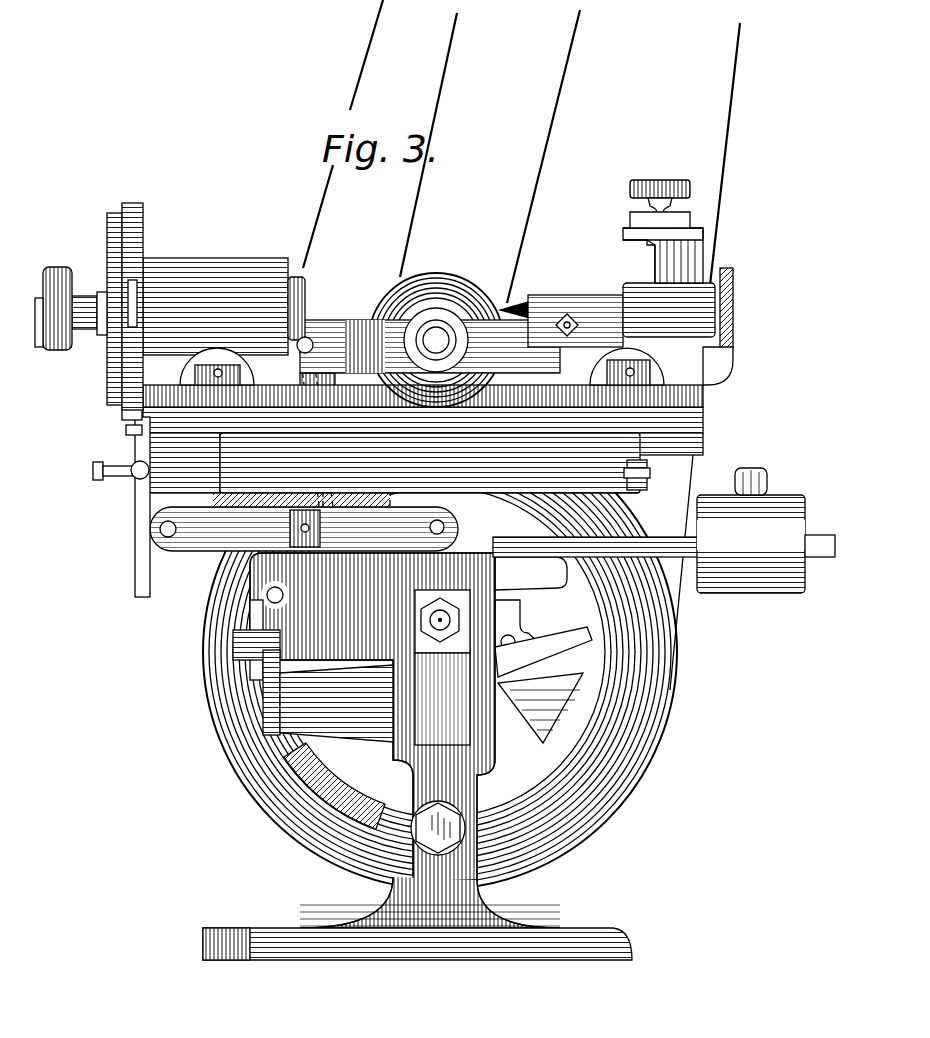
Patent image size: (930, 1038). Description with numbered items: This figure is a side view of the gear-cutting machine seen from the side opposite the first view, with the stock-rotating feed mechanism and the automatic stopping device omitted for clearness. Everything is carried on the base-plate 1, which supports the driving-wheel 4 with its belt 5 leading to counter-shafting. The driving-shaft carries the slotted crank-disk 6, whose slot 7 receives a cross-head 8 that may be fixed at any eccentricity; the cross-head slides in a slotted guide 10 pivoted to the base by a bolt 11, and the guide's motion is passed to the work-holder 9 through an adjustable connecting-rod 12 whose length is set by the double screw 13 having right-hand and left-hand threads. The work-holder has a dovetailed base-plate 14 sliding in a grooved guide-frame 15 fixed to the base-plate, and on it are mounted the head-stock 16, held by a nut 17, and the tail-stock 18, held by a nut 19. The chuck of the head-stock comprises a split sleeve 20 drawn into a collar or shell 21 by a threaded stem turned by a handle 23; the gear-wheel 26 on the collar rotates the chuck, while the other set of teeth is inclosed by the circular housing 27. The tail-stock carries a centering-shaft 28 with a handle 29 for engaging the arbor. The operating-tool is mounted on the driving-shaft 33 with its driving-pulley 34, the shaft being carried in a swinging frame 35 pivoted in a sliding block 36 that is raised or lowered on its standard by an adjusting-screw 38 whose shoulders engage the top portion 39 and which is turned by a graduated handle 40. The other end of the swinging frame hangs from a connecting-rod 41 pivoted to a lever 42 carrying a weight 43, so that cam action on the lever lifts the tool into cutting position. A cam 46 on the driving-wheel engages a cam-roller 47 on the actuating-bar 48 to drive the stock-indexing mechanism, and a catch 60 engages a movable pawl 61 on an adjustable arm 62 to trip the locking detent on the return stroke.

The base-plate 1 is at (480, 885).
The driving-wheel 4 is at (596, 680).
The belt 5 is at (692, 634).
The slotted crank-disk 6 is at (452, 672).
The slot 7 is at (462, 570).
The cross-head 8 is at (462, 600).
The work-holder 9 is at (684, 413).
The slotted guide 10 is at (405, 660).
The bolt 11 is at (422, 835).
The adjustable connecting-rod 12 is at (205, 540).
The double screw 13 is at (290, 542).
The dovetailed base-plate 14 is at (700, 440).
The grooved guide-frame 15 is at (640, 490).
The head-stock 16 is at (222, 272).
The nut 17 is at (120, 362).
The tail-stock 18 is at (640, 292).
The nut 19 is at (619, 365).
The split sleeve 20 is at (310, 306).
The collar or shell 21 is at (341, 134).
The handle 23 is at (65, 270).
The gear-wheel 26 is at (106, 383).
The circular shell or housing 27 is at (135, 246).
The centering-shaft 28 is at (535, 164).
The handle 29 is at (735, 302).
The driving-shaft 33 is at (436, 340).
The driving-pulley 34 is at (436, 340).
The swinging frame 35 is at (356, 328).
The sliding block 36 is at (690, 250).
The adjusting-screw 38 is at (655, 263).
The top portion 39 is at (693, 232).
The handle 40 is at (661, 180).
The connecting-rod 41 is at (330, 384).
The lever 42 is at (667, 540).
The weight 43 is at (766, 530).
The cam 46 is at (312, 770).
The cam-roller 47 is at (255, 640).
The actuating-bar 48 is at (268, 662).
The catch 60 is at (123, 421).
The movable pawl 61 is at (128, 433).
The adjustable arm 62 is at (135, 490).